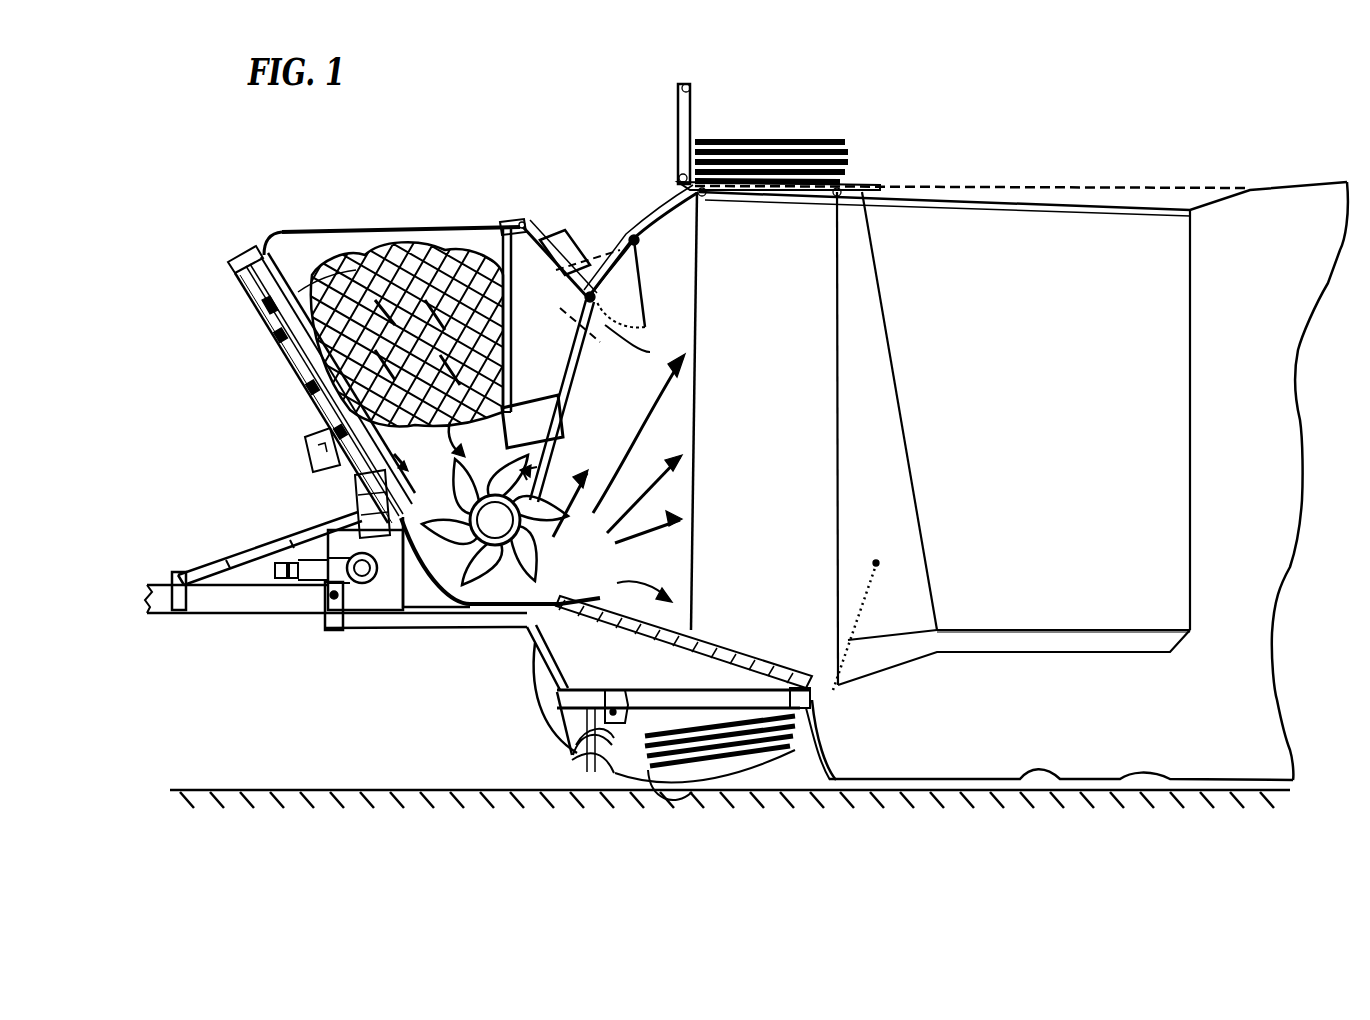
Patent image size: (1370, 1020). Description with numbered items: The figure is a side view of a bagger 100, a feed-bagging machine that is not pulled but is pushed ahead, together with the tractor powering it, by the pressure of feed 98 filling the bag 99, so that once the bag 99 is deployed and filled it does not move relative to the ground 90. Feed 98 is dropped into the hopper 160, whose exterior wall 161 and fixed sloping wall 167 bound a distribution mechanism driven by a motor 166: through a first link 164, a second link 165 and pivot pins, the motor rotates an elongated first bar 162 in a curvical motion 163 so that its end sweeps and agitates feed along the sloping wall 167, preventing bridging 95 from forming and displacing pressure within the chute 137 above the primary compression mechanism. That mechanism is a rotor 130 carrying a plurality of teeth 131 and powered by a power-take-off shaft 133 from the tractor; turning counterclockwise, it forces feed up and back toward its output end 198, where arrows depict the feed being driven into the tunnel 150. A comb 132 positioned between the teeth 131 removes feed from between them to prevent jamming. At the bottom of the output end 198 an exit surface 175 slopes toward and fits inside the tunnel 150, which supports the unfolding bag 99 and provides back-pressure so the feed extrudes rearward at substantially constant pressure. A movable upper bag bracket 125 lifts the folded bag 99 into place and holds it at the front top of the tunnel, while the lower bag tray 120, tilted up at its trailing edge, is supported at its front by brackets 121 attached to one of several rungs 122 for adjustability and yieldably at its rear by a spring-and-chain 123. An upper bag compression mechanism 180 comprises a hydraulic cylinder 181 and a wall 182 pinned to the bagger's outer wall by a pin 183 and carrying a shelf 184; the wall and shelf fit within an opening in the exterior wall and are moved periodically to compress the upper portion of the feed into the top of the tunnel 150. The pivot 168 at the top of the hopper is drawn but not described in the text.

The bagger 100 is at (1140, 103).
The ground 90 is at (258, 790).
The bridging 95 is at (512, 355).
The feed 98 is at (402, 232).
The bag 99 is at (795, 140).
The lower bag tray 120 is at (693, 766).
The brackets 121 is at (558, 708).
The rungs 122 is at (579, 756).
The spring-and-chain 123 is at (850, 611).
The movable upper bag bracket 125 is at (678, 122).
The rotor 130 is at (548, 483).
The teeth 131 is at (540, 580).
The comb 132 is at (574, 408).
The power-take-off shaft 133 is at (283, 568).
The chute 137 is at (468, 437).
The tunnel 150 is at (1078, 612).
The hopper 160 is at (330, 192).
The exterior wall 161 is at (286, 360).
The first bar 162 is at (419, 480).
The curvical motion 163 is at (402, 455).
The first link 164 is at (262, 324).
The second link 165 is at (332, 416).
The motor 166 is at (318, 472).
The fixed wall 167 is at (284, 272).
The pivot 168 is at (478, 236).
The exit surface 175 is at (708, 640).
The upper bag compression mechanism 180 is at (562, 245).
The hydraulic cylinder 181 is at (557, 245).
The wall 182 is at (645, 268).
The pin 183 is at (632, 236).
The shelf 184 is at (652, 351).
The output end 198 is at (602, 478).